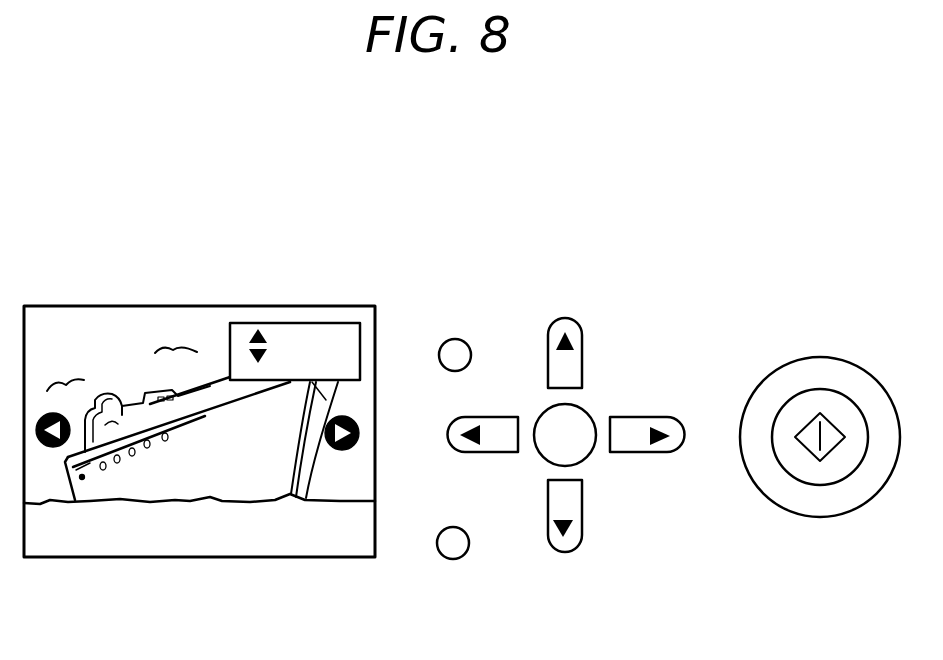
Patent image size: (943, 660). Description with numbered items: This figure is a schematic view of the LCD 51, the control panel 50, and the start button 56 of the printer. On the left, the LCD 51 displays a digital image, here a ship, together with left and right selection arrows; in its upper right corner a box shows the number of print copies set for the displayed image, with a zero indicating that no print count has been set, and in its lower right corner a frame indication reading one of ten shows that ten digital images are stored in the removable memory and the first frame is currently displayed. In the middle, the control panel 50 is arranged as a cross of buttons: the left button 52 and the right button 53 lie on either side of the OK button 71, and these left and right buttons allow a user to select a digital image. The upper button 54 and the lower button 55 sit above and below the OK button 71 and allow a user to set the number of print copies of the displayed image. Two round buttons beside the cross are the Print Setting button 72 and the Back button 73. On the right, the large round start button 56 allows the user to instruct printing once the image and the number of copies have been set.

The control panel 50 is at (573, 427).
The LCD 51 is at (192, 557).
The left button 52 is at (502, 452).
The right button 53 is at (660, 452).
The upper button 54 is at (565, 318).
The lower button 55 is at (572, 552).
The start button 56 is at (815, 517).
The OK button 71 is at (588, 412).
The Print Setting button 72 is at (440, 367).
The Back button 73 is at (441, 556).